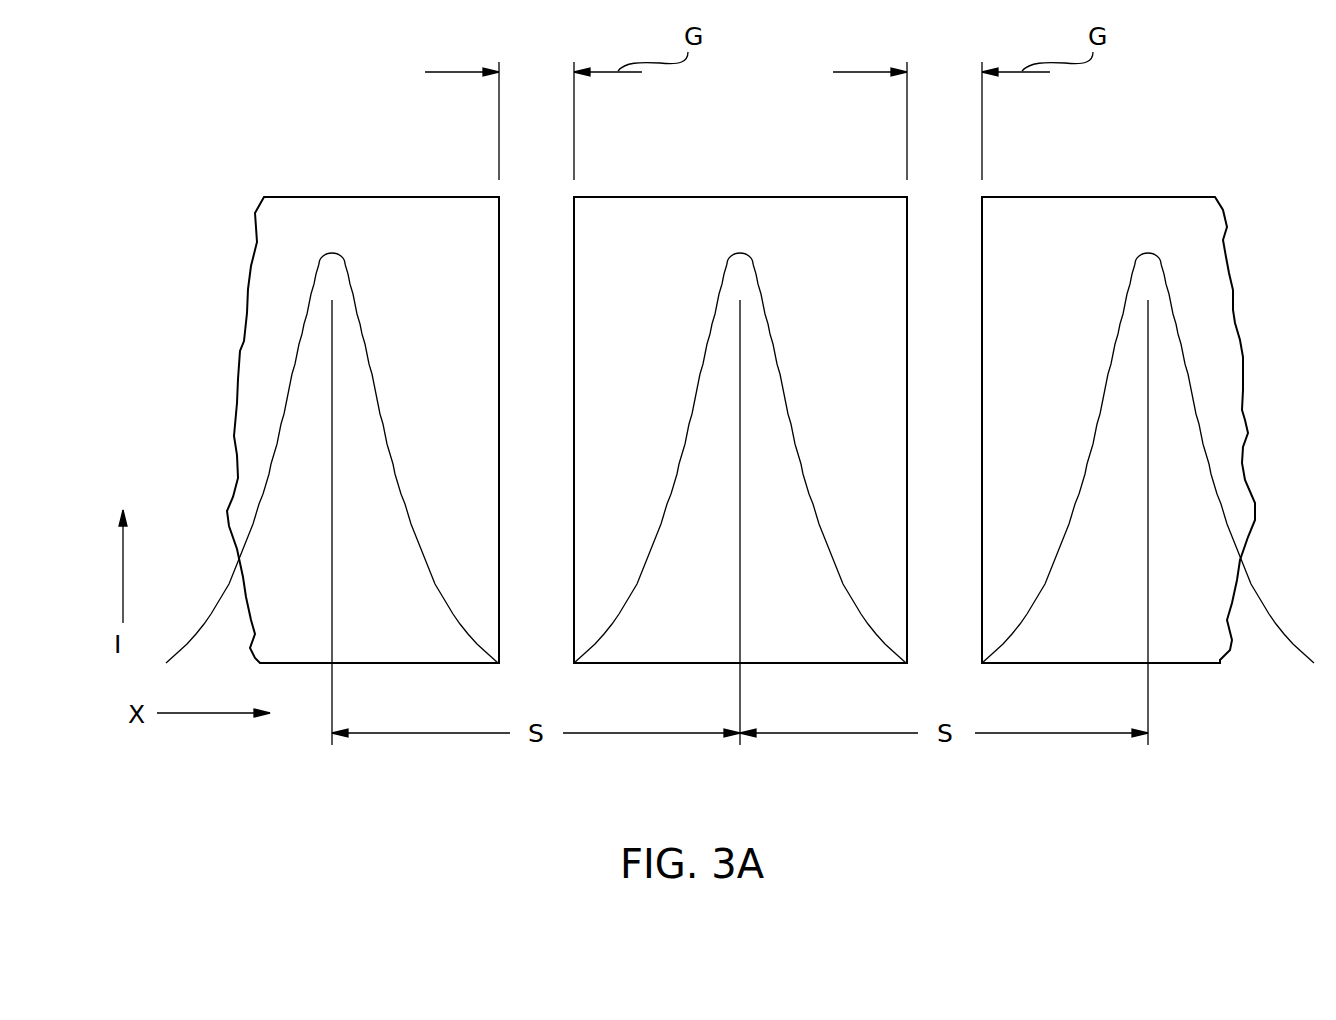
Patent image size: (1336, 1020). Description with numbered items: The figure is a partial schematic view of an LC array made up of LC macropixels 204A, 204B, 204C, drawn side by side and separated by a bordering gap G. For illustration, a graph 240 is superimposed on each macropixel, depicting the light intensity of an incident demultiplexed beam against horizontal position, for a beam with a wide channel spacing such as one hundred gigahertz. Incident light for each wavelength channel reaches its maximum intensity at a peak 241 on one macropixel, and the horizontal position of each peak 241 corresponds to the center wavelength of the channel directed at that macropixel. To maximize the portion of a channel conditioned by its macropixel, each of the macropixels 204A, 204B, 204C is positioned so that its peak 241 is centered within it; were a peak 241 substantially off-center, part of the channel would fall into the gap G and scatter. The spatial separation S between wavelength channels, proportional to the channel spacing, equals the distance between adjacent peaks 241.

The LC macropixel 204A is at (403, 197).
The LC macropixel 204B is at (678, 197).
The LC macropixel 204C is at (1067, 197).
The graph 240 is at (786, 412).
The peak 241 is at (334, 253).